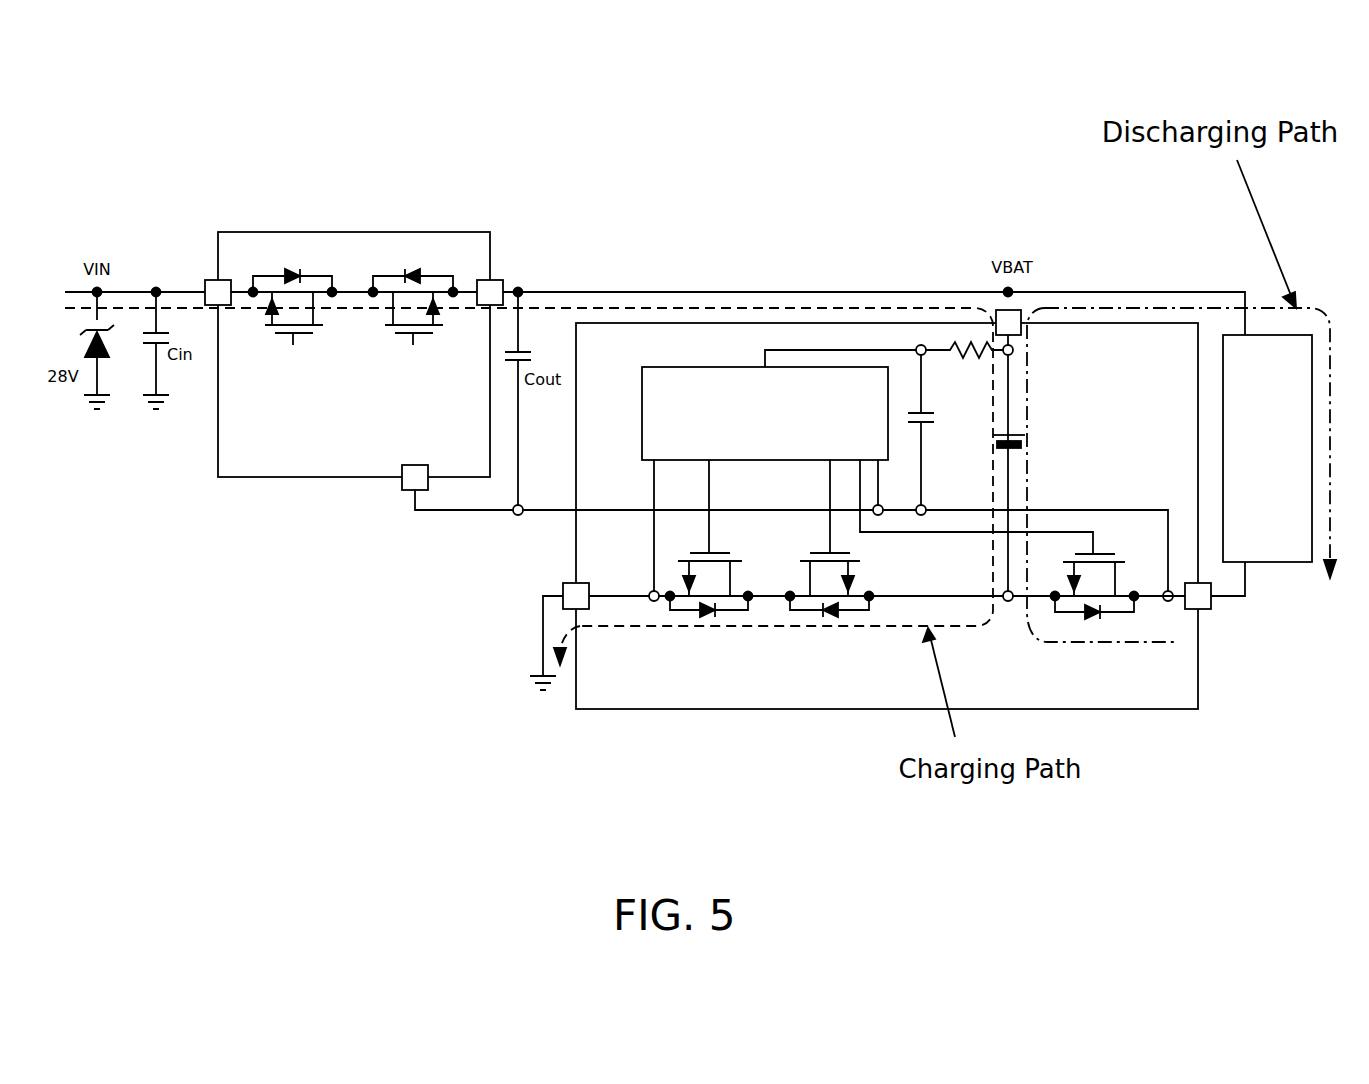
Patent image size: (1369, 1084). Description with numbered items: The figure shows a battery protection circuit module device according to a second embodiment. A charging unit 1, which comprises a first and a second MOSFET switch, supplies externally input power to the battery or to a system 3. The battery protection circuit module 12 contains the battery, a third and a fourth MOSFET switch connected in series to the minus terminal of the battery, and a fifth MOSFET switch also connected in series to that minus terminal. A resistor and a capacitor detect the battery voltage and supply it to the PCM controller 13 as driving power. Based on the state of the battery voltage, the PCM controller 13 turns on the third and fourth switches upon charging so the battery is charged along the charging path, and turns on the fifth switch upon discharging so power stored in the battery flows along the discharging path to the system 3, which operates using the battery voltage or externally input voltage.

The charging unit 1 is at (341, 241).
The system 3 is at (1230, 355).
The protection circuit module (PCM) with three switches 12 is at (718, 710).
The PCM controller 13 is at (667, 378).